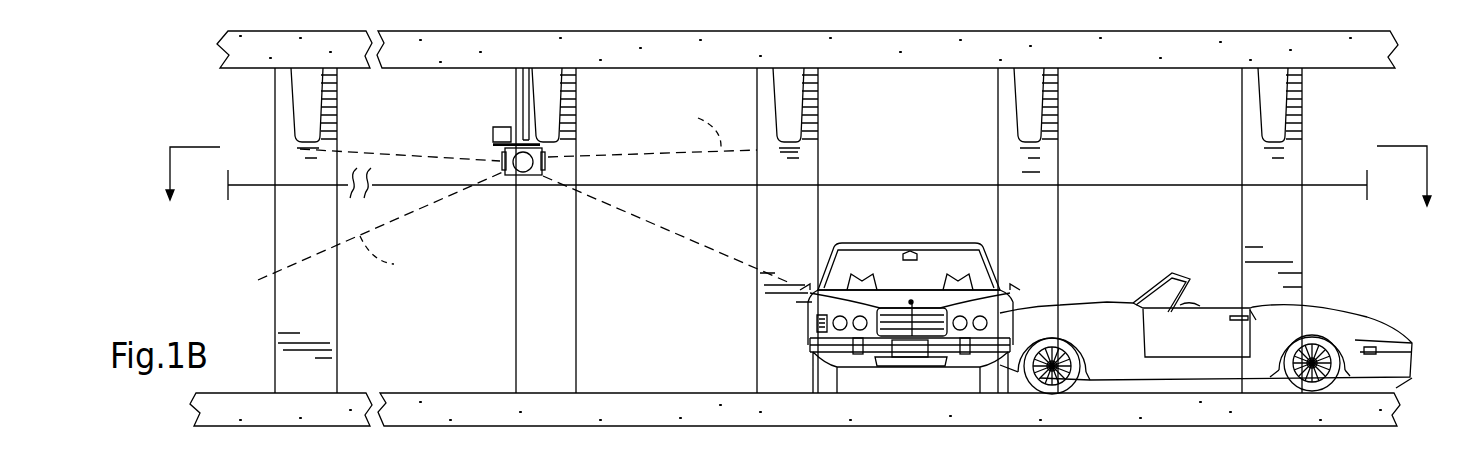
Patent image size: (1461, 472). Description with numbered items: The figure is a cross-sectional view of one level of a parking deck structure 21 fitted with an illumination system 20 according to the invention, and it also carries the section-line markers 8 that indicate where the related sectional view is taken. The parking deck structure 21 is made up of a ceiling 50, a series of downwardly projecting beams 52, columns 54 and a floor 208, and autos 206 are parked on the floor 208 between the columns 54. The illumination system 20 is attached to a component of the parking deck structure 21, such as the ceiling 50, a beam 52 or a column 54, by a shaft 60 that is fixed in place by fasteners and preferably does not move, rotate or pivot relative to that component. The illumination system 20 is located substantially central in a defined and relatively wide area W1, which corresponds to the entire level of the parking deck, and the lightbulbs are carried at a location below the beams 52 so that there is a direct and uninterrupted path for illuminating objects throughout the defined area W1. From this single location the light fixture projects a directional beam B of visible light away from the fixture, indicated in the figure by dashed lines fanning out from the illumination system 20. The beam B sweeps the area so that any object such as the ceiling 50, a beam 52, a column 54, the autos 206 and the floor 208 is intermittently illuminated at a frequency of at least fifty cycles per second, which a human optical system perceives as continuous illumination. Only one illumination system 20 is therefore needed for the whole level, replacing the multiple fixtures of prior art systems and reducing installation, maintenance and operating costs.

The illumination system 20 is at (538, 138).
The shaft 60 is at (523, 87).
The ceiling 50 is at (468, 68).
The beam 52 is at (307, 107).
The column 54 is at (813, 139).
The autos 206 is at (983, 270).
The floor 208 is at (732, 393).
The parking deck structure 21 is at (1402, 384).
The section line 8- 8 is at (798, 191).
The defined area W1 is at (1320, 184).
The beam of visible light B is at (524, 194).